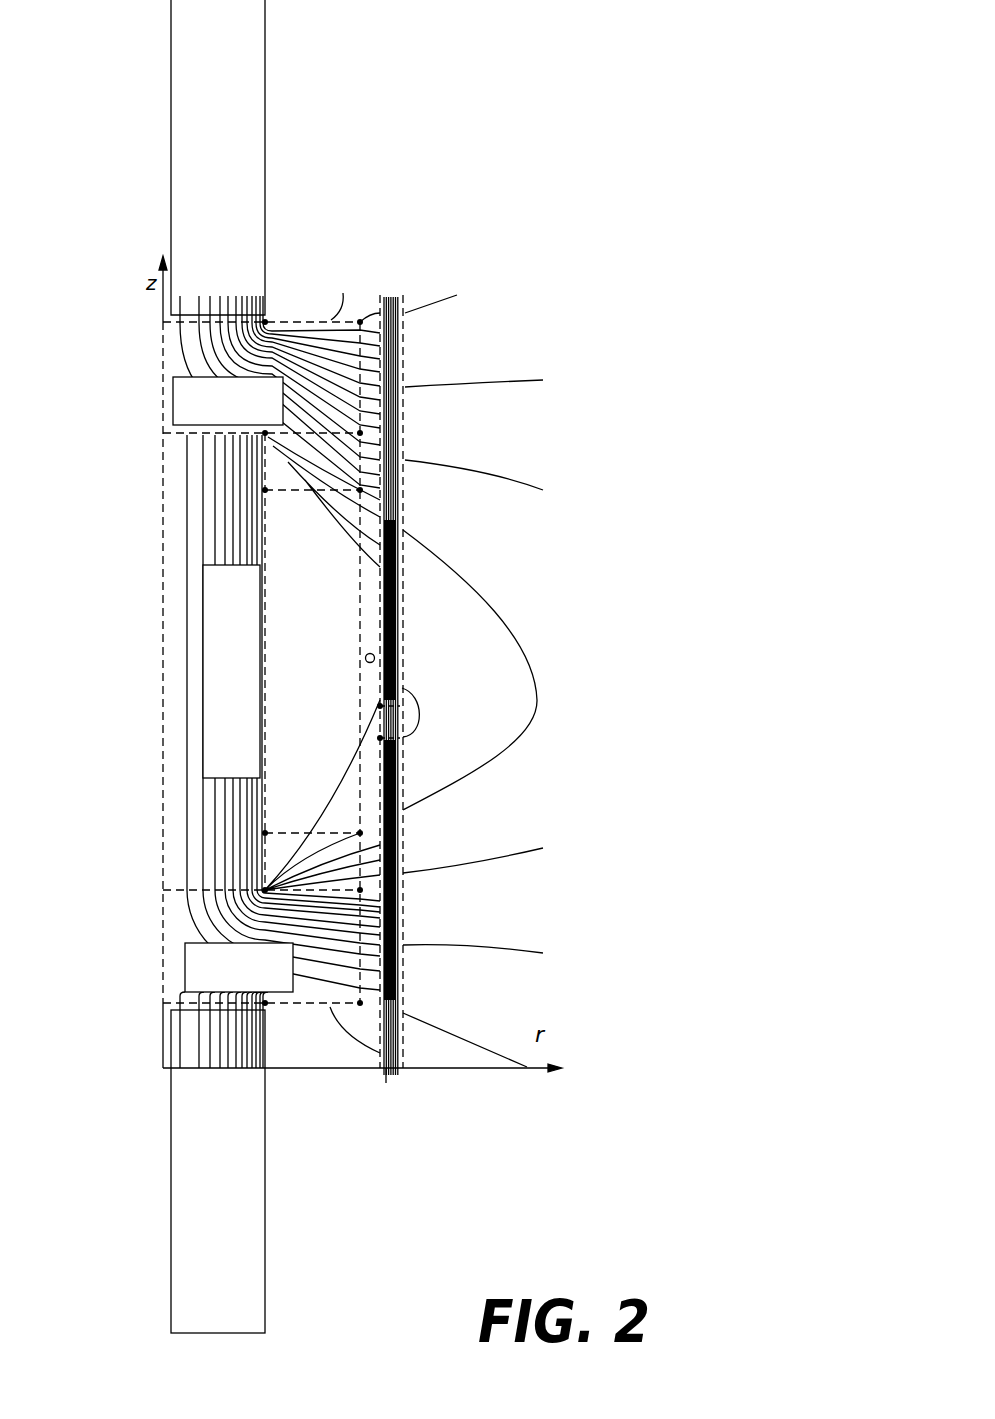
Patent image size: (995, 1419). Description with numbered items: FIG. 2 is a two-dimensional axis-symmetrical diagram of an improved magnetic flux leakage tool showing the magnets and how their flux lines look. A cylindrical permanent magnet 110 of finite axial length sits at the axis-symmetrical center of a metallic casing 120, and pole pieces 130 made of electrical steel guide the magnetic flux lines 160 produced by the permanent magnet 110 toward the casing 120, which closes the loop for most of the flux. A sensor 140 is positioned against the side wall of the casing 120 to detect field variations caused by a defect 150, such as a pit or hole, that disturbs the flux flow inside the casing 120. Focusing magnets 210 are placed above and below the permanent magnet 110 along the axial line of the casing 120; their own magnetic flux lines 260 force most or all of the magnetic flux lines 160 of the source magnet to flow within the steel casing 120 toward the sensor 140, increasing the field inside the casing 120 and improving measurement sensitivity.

The permanent magnet 110 is at (200, 682).
The casing 120 is at (390, 407).
The pole piece 130 is at (170, 385).
The sensor 140 is at (375, 658).
The defect 150 is at (403, 723).
The magnetic flux lines 160 is at (183, 837).
The focusing magnet 210 is at (265, 158).
The magnetic flux lines of the focusing magnets 260 is at (393, 963).